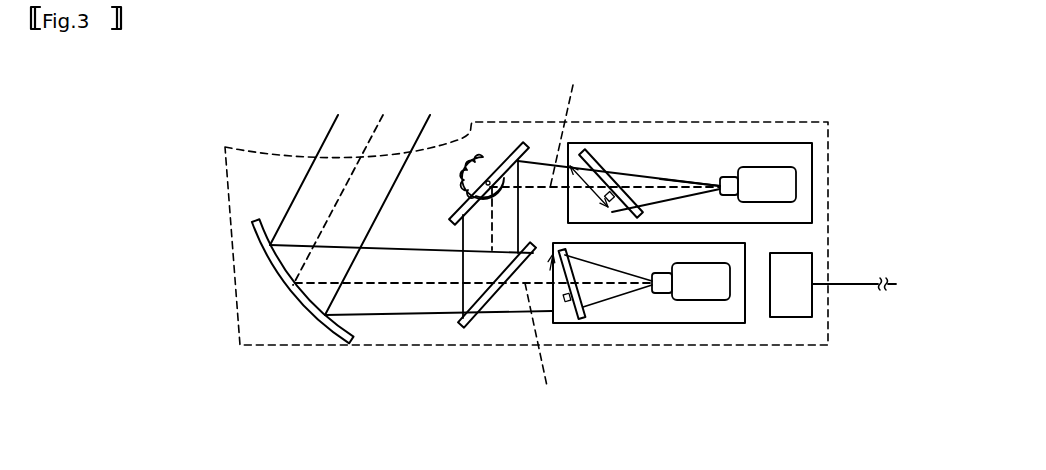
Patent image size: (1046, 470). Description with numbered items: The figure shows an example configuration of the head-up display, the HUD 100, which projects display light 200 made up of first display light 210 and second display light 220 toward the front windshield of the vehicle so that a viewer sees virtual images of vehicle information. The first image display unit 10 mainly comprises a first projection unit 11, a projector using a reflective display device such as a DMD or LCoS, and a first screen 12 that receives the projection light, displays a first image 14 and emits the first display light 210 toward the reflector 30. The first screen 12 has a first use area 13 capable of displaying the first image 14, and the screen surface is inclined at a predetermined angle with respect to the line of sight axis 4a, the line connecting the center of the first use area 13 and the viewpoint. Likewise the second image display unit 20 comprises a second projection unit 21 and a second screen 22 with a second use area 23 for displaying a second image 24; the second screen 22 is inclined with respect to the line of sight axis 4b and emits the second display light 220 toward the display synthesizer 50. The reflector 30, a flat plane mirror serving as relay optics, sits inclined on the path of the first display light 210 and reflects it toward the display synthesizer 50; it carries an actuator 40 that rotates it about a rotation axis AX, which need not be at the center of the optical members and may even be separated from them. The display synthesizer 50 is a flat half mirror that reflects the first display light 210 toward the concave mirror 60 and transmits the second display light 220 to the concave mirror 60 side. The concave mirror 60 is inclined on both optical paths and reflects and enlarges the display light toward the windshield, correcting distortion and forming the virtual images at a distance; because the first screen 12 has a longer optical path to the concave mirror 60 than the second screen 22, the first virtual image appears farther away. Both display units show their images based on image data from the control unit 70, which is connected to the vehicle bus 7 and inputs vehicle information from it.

The head-up display 100 is at (830, 122).
The display light 200 is at (428, 230).
The first display light 210 is at (543, 157).
The second display light 220 is at (513, 315).
The rotation axis AX is at (488, 181).
The line of sight axis 4a is at (571, 126).
The line of sight axis 4b is at (545, 346).
The actuator 40 is at (480, 160).
The reflector 30 is at (518, 143).
The display synthesizer 50 is at (462, 324).
The concave mirror 60 is at (335, 333).
The first image display unit 10 is at (721, 161).
The first projection unit 11 is at (763, 166).
The first screen 12 is at (582, 153).
The first use area 13 is at (614, 190).
The first image 14 is at (645, 187).
The second image display unit 20 is at (684, 314).
The second projection unit 21 is at (698, 299).
The second screen 22 is at (579, 318).
The second use area 23 is at (553, 299).
The second image 24 is at (584, 307).
The control unit 70 is at (812, 305).
The bus 7 is at (846, 284).